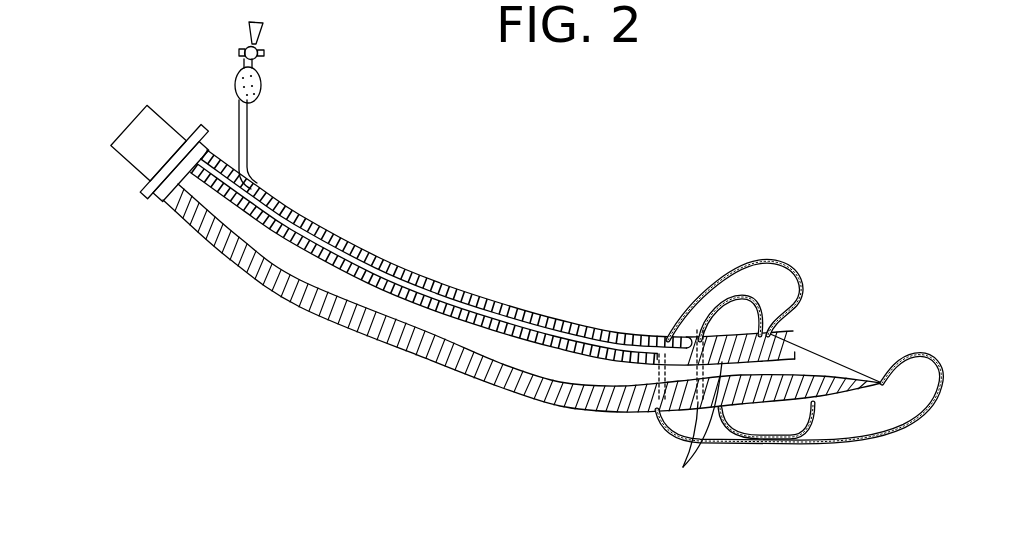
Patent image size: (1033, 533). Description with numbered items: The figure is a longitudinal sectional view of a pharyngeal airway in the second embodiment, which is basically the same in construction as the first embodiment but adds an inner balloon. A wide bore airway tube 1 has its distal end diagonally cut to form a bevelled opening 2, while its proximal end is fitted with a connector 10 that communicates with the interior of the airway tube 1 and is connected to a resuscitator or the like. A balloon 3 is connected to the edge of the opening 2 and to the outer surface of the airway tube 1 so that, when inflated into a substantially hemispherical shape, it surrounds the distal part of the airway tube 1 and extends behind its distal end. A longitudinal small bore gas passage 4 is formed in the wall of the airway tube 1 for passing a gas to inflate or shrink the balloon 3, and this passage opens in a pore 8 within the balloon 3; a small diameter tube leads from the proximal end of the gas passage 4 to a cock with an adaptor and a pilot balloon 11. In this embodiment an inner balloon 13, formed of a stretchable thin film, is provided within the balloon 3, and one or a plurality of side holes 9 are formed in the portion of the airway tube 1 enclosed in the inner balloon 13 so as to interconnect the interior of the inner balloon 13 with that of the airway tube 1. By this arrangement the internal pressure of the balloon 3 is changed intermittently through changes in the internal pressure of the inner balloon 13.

The airway tube 1 is at (316, 316).
The bevelled opening 2 is at (811, 348).
The balloon 3 is at (768, 263).
The gas passage 4 is at (374, 268).
The pore 8 is at (673, 331).
The side holes 9 is at (690, 412).
The connector 10 is at (138, 158).
The pilot balloon 11 is at (264, 88).
The inner balloon 13 is at (729, 290).